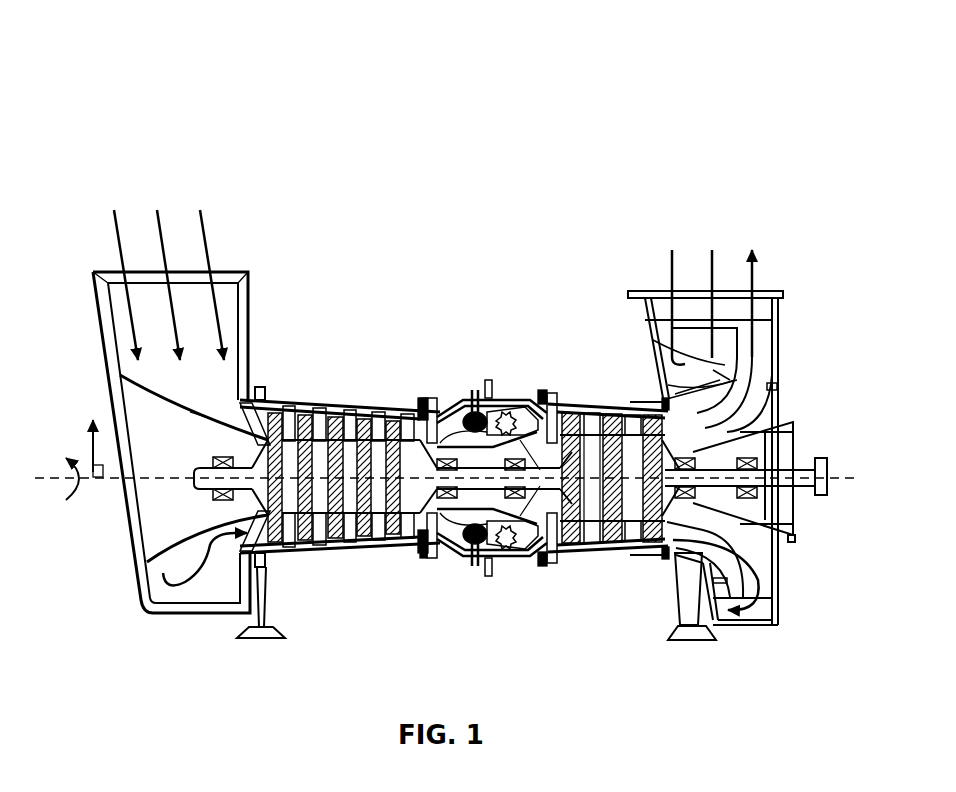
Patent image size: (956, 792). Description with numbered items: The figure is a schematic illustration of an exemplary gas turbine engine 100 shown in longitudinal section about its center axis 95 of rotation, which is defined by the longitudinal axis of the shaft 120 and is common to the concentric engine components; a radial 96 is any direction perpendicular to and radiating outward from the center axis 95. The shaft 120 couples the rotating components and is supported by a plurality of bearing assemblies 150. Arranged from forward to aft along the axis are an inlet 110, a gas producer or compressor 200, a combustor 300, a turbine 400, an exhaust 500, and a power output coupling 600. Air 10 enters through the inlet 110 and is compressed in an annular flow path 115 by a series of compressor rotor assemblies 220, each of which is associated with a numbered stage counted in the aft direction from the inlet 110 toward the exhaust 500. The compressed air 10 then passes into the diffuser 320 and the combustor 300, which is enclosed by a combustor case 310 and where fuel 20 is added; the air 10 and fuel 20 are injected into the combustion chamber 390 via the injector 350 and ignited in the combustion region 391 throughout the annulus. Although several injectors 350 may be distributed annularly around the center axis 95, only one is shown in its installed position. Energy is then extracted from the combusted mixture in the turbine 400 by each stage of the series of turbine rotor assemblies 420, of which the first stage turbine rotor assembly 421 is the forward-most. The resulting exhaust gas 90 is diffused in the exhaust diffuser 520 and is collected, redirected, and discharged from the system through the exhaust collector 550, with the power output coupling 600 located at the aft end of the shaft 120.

The gas turbine engine 100 is at (124, 44).
The air 10 is at (112, 240).
The inlet 110 is at (83, 188).
The annular flow path 115 is at (230, 408).
The shaft 120 is at (198, 470).
The bearing assemblies 150 is at (228, 502).
The radial 96 is at (88, 442).
The center axis 95 is at (68, 488).
The compressor 200 is at (268, 188).
The compressor rotor assemblies 220 is at (337, 539).
The combustor 300 is at (422, 188).
The diffuser 320 is at (488, 320).
The injector 350 is at (466, 402).
The combustor case 310 is at (488, 398).
The combustion chamber 390 is at (526, 404).
The combustion region 391 is at (510, 535).
The fuel 20 is at (476, 570).
The turbine 400 is at (668, 188).
The turbine rotor assemblies 420 is at (645, 544).
The first stage turbine rotor assembly 421 is at (568, 542).
The exhaust 500 is at (668, 188).
The exhaust gas 90 is at (670, 274).
The exhaust collector 550 is at (652, 335).
The exhaust diffuser 520 is at (668, 372).
The power output coupling 600 is at (828, 462).